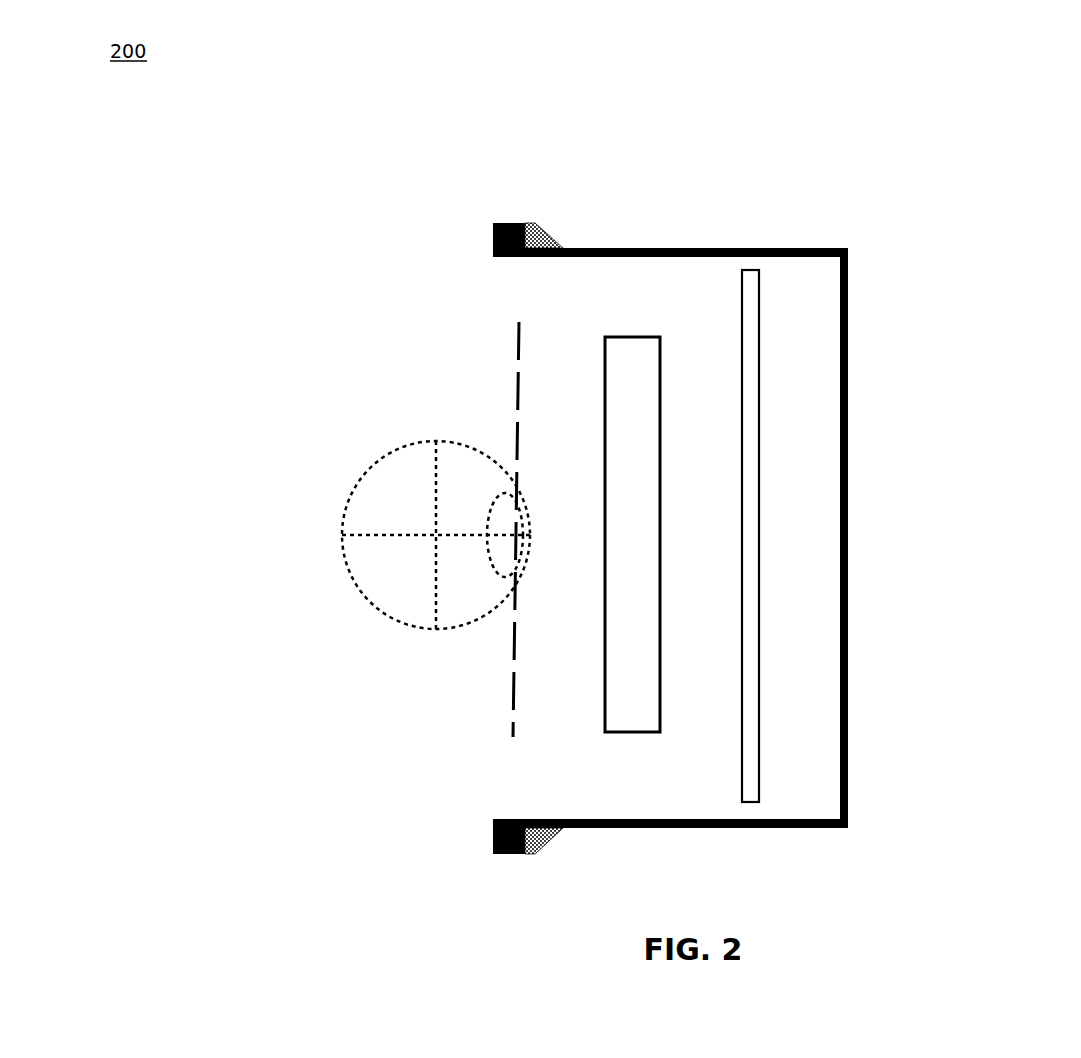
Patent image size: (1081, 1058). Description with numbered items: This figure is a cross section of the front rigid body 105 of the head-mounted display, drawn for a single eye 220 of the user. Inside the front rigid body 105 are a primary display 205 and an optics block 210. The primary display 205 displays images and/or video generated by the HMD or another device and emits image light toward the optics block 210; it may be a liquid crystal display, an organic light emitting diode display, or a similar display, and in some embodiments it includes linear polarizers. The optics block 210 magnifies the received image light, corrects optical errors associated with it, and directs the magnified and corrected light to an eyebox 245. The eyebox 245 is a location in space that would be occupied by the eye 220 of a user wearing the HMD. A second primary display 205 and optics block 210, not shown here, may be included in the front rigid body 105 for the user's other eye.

The front rigid body 105 is at (763, 248).
The optics block 210 is at (625, 337).
The primary display 205 is at (760, 353).
The eyebox 245 is at (520, 340).
The eye 220 is at (343, 538).